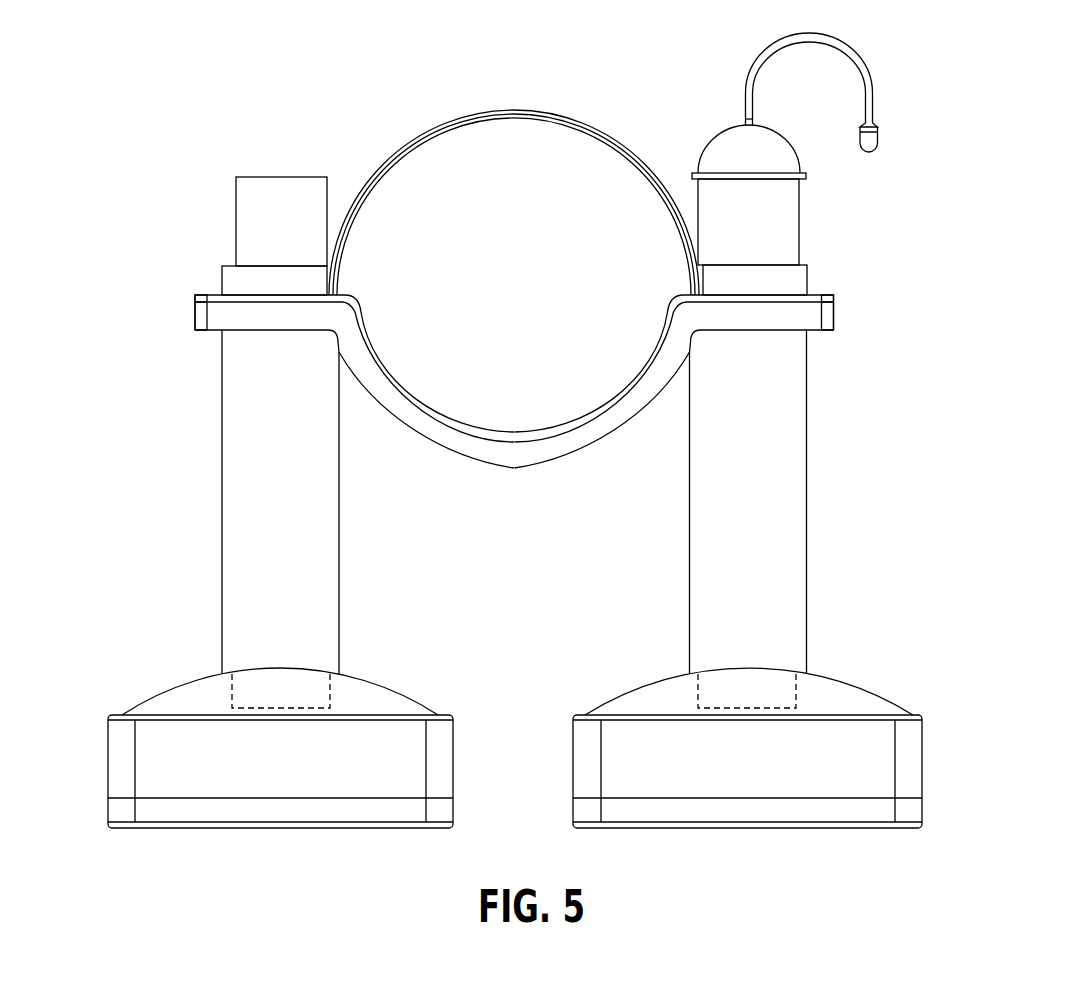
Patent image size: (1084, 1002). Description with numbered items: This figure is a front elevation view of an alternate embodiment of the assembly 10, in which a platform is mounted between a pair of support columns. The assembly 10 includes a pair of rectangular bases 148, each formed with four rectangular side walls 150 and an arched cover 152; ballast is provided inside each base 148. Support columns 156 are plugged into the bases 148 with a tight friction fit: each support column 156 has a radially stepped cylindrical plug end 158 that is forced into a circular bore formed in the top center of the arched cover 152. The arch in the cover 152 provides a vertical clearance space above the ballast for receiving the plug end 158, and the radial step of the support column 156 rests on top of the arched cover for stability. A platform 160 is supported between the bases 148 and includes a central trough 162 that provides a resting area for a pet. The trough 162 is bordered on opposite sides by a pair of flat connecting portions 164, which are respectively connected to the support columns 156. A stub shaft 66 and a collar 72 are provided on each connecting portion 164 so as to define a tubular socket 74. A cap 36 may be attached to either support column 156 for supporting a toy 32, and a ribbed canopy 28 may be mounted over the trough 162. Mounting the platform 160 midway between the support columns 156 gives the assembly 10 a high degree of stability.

The assembly 10 is at (336, 85).
The ribbed canopy 28 is at (496, 107).
The toy 32 is at (879, 133).
The cap 36 is at (715, 136).
The stub shaft 66 is at (243, 242).
The collar 72 is at (233, 277).
The tubular socket 74 is at (800, 262).
The rectangular base 148 is at (407, 677).
The side wall 150 is at (108, 735).
The arched cover 152 is at (173, 688).
The support column 156 is at (237, 502).
The plug end 158 is at (318, 692).
The platform 160 is at (517, 482).
The trough 162 is at (548, 428).
The connecting portion 164 is at (210, 290).